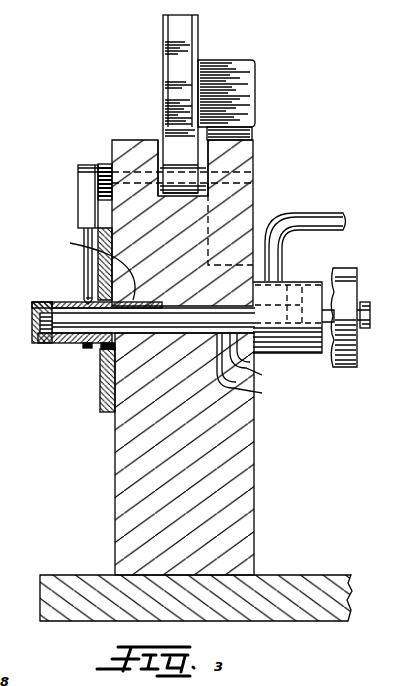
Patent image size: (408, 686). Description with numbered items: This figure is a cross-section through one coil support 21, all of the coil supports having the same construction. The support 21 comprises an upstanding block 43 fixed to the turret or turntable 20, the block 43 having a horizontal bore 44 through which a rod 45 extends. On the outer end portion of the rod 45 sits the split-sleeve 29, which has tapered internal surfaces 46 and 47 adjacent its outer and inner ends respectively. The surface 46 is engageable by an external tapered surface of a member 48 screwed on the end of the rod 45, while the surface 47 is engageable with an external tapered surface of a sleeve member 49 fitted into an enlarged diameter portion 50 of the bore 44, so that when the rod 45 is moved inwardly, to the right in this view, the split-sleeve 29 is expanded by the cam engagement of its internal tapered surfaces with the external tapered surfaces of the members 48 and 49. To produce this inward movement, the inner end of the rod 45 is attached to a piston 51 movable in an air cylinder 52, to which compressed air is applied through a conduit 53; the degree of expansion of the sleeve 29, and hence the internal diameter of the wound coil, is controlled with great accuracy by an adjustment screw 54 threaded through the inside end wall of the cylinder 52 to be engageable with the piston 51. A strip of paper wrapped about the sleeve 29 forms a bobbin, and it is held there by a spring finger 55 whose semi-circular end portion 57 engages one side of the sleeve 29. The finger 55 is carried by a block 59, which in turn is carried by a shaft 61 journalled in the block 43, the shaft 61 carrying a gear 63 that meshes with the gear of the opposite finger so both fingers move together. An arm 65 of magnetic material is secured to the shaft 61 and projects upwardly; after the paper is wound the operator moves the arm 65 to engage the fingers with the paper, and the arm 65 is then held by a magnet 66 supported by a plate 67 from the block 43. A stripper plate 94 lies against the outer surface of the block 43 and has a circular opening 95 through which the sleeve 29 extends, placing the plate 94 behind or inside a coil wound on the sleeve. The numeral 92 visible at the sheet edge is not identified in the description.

The turret 20 is at (303, 622).
The coil support 21 is at (111, 131).
The split-sleeve 29 is at (58, 344).
The upstanding block 43 is at (250, 500).
The horizontal bore 44 is at (250, 393).
The rod 45 is at (250, 375).
The tapered internal surface 46 is at (44, 302).
The tapered internal surface 47 is at (110, 306).
The member 48 is at (34, 343).
The sleeve member 49 is at (104, 351).
The enlarged diameter portion 50 is at (87, 268).
The piston 51 is at (296, 298).
The air cylinder 52 is at (318, 353).
The conduit 53 is at (300, 214).
The adjustment screw 54 is at (366, 302).
The spring finger 55 is at (84, 229).
The semi-circular end portion 57 is at (86, 348).
The block 59 is at (80, 198).
The shaft 61 is at (133, 166).
The gear 63 is at (100, 164).
The arm 65 is at (191, 37).
The magnet 66 is at (258, 83).
The plate 67 is at (251, 135).
The numeral 92 is at (69, 680).
The stripper plate 94 is at (106, 414).
The circular opening 95 is at (90, 298).